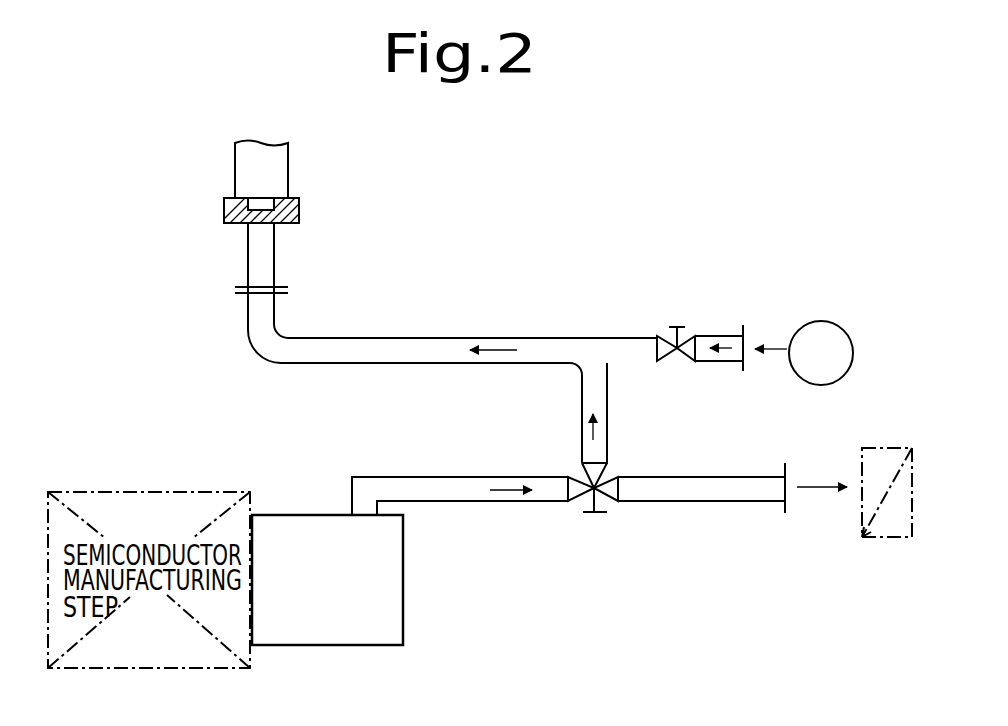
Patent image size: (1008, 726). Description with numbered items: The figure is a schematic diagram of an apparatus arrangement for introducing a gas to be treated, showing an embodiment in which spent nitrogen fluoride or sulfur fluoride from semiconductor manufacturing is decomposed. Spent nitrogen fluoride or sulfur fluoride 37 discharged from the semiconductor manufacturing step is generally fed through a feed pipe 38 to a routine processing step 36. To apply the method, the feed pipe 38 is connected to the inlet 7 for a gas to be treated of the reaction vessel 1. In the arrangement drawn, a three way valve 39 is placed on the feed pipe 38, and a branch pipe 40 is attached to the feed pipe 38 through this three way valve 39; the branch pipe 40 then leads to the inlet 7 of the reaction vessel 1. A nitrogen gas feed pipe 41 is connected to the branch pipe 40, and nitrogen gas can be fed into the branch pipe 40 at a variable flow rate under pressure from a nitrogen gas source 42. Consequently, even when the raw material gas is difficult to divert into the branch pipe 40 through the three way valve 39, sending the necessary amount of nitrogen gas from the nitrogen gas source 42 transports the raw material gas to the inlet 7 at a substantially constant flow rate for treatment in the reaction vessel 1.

The reaction vessel 1 is at (288, 183).
The inlet for a gas to be treated 7 is at (260, 287).
The routine processing step 36 is at (860, 497).
The spent nitrogen fluoride or sulfur fluoride 37 is at (403, 617).
The feed pipe 38 is at (420, 477).
The three way valve 39 is at (605, 517).
The branch pipe 40 is at (582, 437).
The nitrogen gas feed pipe 41 is at (717, 336).
The nitrogen gas source 42 is at (810, 322).